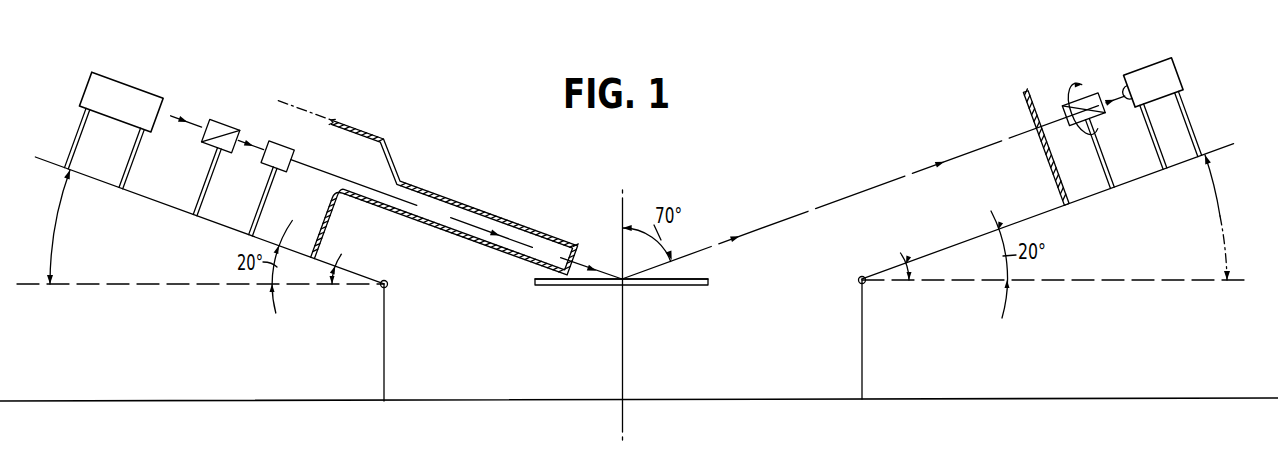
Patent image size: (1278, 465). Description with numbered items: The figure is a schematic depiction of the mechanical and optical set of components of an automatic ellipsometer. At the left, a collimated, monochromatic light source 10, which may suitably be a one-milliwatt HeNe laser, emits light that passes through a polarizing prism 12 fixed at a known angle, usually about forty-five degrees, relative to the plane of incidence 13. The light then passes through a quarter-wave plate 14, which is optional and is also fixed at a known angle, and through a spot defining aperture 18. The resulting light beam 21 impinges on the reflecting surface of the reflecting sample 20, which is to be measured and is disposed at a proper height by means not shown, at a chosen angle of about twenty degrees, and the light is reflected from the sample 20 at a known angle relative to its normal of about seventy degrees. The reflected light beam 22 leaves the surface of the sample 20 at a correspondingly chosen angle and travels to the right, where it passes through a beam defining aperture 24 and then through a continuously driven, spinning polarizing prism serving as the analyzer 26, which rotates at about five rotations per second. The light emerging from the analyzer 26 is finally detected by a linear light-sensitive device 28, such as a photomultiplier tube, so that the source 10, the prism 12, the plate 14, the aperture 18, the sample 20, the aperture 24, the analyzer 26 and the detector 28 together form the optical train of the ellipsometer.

The light source 10 is at (121, 87).
The polarizing prism 12 is at (222, 121).
The quarter-wave plate 14 is at (273, 148).
The spot defining aperture 18 is at (579, 257).
The light beam 21 is at (600, 268).
The plane of incidence 13 is at (688, 278).
The reflecting sample 20 is at (708, 283).
The light beam 22 is at (764, 227).
The beam defining aperture 24 is at (1036, 123).
The spinning polarizing prism (analyzer) 26 is at (1095, 90).
The linear light-sensitive device 28 is at (1168, 70).